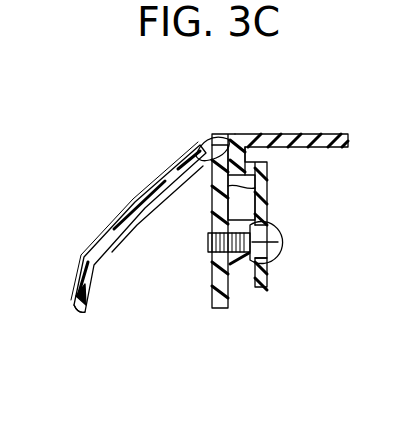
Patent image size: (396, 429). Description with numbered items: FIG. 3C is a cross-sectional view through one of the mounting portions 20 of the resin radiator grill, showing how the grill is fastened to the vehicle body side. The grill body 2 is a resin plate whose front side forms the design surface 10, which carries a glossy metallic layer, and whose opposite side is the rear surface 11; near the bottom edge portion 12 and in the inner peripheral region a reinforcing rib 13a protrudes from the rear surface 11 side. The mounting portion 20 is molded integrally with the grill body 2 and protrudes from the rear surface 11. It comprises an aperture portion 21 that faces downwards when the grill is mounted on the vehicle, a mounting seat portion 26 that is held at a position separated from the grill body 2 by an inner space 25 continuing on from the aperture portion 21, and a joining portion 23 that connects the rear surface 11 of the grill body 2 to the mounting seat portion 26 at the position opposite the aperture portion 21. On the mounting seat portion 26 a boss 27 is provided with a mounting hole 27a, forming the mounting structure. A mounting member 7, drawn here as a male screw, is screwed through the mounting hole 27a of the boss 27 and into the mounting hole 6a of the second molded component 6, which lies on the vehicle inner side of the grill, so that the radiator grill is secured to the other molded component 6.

The grill body 2 is at (127, 243).
The design surface 10 is at (139, 202).
The rear surface 11 is at (113, 253).
The bottom edge portion 12 is at (72, 306).
The joining portion 23 is at (198, 160).
The aperture portion 21 is at (143, 322).
The inner space 25 is at (209, 189).
The mounting member 7 is at (210, 254).
The reinforcing rib 13a is at (222, 130).
The second molded component 6 is at (291, 160).
The mounting hole 6a is at (276, 257).
The mounting seat portion 26 is at (268, 195).
The boss 27 is at (285, 279).
The mounting hole 27a is at (278, 228).
The mounting portion 20 is at (225, 314).